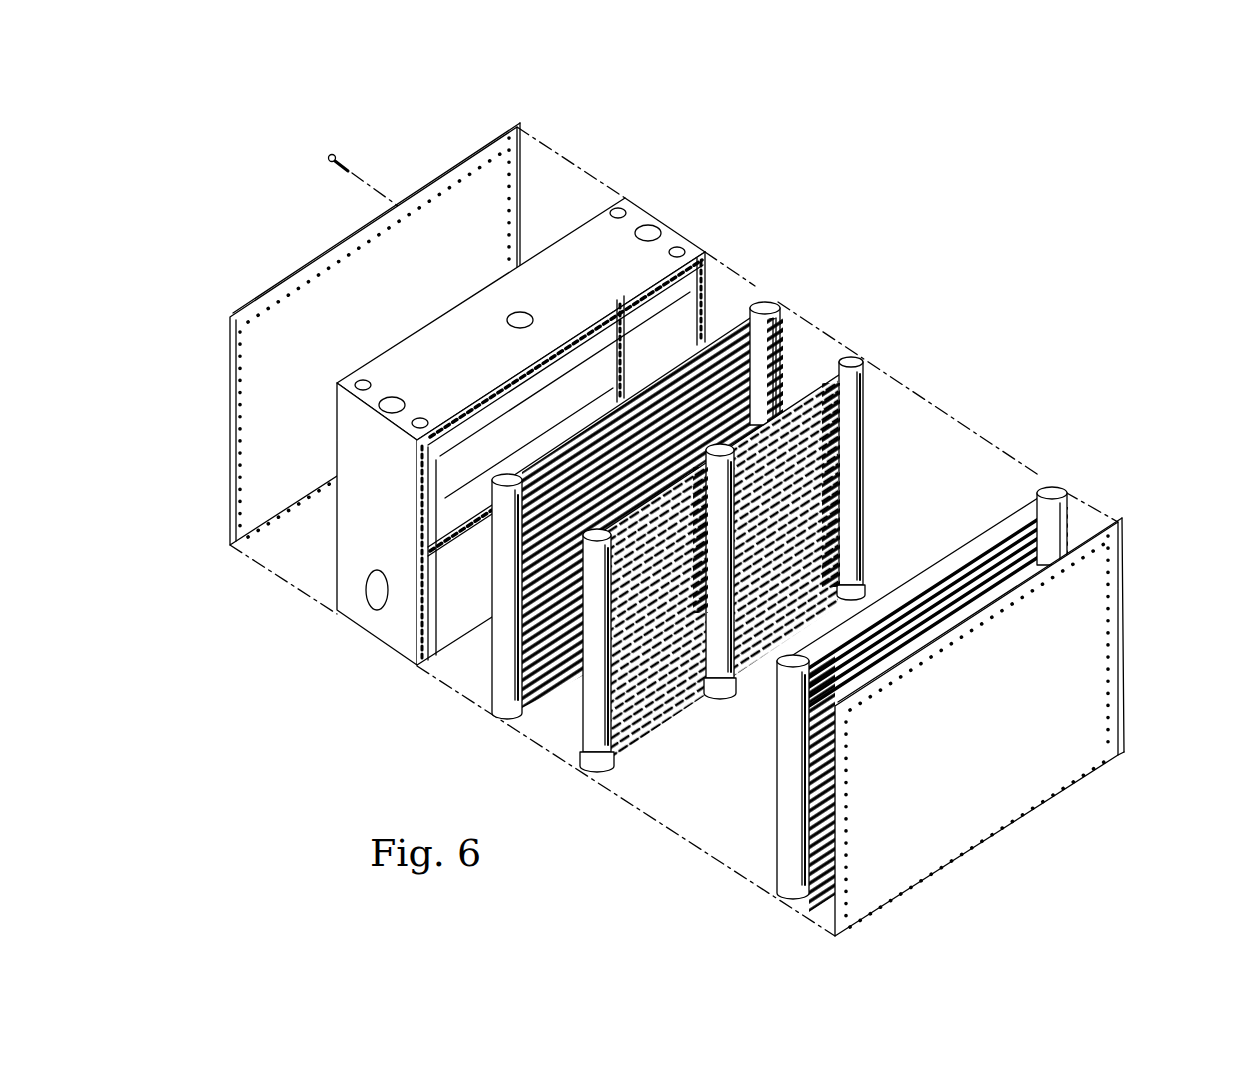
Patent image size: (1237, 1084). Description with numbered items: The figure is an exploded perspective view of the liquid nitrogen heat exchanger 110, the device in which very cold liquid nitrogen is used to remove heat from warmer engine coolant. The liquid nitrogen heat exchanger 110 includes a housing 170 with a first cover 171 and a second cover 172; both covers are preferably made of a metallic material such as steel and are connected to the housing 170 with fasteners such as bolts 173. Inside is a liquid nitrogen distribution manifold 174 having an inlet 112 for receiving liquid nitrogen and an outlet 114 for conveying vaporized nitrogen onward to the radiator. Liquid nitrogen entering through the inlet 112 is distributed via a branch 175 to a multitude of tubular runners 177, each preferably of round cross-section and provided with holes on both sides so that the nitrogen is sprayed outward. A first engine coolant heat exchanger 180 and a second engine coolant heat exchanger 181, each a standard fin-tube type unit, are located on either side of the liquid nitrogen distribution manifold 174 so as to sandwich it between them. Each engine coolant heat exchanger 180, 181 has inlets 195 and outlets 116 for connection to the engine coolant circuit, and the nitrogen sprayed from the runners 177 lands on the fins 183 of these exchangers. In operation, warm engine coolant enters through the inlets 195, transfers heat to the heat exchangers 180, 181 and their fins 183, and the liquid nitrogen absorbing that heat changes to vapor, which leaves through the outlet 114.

The liquid nitrogen heat exchanger 110 is at (1062, 258).
The inlet 112 is at (717, 445).
The outlet 114 is at (373, 592).
The outlets 116 is at (508, 477).
The housing 170 is at (583, 222).
The first cover 171 is at (288, 322).
The second cover 172 is at (960, 809).
The bolts 173 is at (337, 155).
The liquid nitrogen distribution manifold 174 is at (866, 429).
The branch 175 is at (748, 655).
The runners 177 is at (633, 727).
The first engine coolant heat exchanger 180 is at (1002, 508).
The second engine coolant heat exchanger 181 is at (786, 375).
The fins 183 is at (548, 650).
The inlets 195 is at (766, 364).